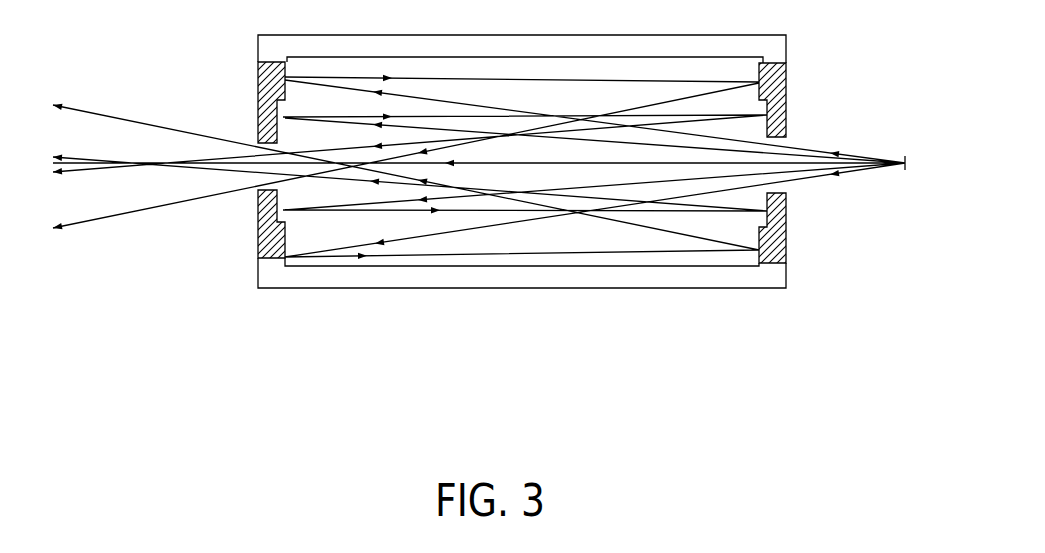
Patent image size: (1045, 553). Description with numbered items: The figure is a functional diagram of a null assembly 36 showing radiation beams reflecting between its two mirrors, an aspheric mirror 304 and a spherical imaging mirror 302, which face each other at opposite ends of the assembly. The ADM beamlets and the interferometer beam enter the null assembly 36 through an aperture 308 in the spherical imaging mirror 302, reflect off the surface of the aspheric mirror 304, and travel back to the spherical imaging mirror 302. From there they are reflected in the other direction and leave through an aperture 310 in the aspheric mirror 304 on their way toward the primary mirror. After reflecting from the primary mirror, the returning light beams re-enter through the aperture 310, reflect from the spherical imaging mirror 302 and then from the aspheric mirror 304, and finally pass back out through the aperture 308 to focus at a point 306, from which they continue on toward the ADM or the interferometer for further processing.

The null assembly 36 is at (504, 289).
The spherical imaging mirror 302 is at (786, 247).
The aspheric mirror 304 is at (268, 236).
The focus point 306 is at (907, 170).
The aperture in spherical mirror 308 is at (772, 168).
The aperture in aspheric mirror 310 is at (265, 170).